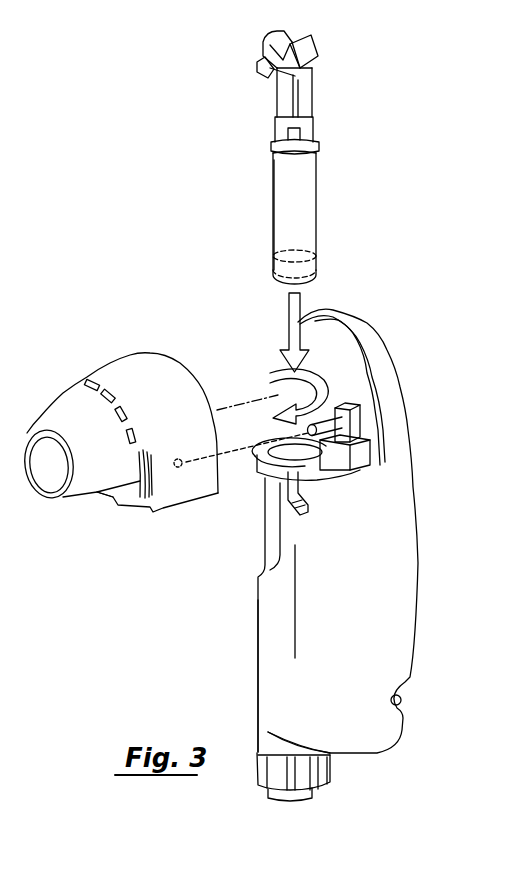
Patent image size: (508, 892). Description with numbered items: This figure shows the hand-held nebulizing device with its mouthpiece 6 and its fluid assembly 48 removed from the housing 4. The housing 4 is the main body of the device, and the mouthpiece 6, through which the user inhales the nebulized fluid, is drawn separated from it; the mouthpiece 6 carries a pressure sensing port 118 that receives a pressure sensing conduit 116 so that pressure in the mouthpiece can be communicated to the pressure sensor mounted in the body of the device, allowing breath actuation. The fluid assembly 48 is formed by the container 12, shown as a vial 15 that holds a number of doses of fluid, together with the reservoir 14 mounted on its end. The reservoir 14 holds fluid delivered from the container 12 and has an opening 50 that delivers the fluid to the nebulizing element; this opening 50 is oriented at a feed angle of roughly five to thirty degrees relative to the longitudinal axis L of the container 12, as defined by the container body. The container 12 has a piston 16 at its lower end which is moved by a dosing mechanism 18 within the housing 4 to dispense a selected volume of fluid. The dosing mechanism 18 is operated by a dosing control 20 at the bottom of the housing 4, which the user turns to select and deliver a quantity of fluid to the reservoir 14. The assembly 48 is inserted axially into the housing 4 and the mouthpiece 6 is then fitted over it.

The housing 4 is at (392, 530).
The mouthpiece 6 is at (130, 385).
The container 12 is at (318, 203).
The reservoir 14 is at (262, 52).
The vial 15 is at (268, 203).
The piston 16 is at (318, 262).
The dosing mechanism 18 is at (282, 663).
The dosing control 20 is at (322, 772).
The fluid assembly 48 is at (334, 128).
The opening 50 is at (262, 86).
The pressure sensing conduit 116 is at (333, 410).
The pressure sensing port 118 is at (185, 455).
The longitudinal axis L is at (295, 585).